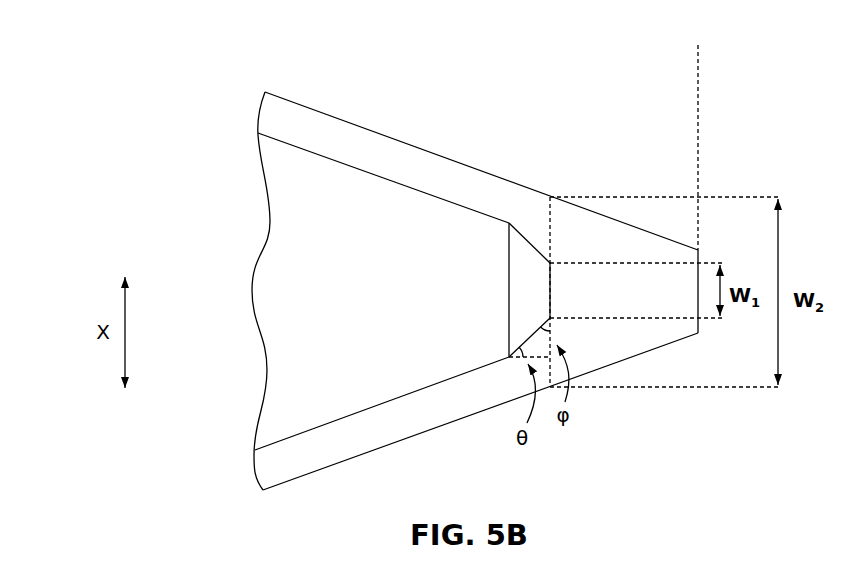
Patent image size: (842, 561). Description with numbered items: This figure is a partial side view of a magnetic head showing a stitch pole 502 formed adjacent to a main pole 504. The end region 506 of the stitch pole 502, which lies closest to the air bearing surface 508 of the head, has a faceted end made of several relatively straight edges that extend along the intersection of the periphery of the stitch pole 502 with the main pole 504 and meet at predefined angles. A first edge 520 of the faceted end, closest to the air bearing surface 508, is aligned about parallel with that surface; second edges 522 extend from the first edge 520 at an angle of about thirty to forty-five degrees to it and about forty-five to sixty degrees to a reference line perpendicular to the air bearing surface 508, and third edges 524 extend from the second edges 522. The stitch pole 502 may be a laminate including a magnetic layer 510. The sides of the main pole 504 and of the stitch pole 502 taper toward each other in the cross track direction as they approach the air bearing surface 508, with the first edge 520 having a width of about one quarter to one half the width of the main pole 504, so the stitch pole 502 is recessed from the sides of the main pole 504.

The stitch pole 502 is at (268, 220).
The main pole 504 is at (393, 139).
The end region 506 is at (557, 292).
The air bearing surface 508 is at (702, 90).
The magnetic layer 510 is at (367, 293).
The first edge 520 is at (551, 300).
The second edges 522 is at (525, 333).
The third edges 524 is at (352, 160).